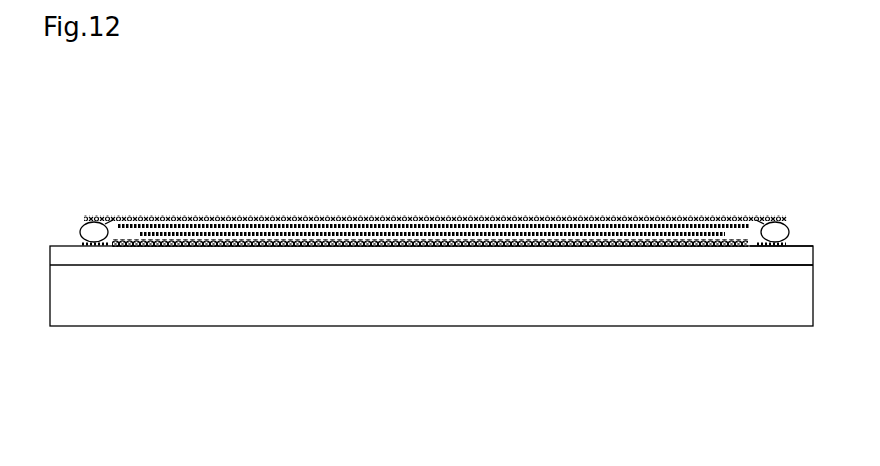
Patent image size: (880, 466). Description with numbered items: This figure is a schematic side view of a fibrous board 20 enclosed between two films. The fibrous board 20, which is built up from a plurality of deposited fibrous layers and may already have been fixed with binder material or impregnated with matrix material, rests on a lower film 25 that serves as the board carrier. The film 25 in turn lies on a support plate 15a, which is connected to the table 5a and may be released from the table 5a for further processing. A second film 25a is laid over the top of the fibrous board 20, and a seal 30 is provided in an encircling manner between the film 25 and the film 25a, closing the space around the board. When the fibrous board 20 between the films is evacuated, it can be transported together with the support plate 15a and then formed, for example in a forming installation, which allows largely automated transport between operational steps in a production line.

The table 5a is at (498, 326).
The support plate 15a is at (800, 245).
The fibrous board 20 is at (420, 218).
The film 25 is at (751, 246).
The film 25a is at (752, 221).
The seal 30 is at (79, 225).